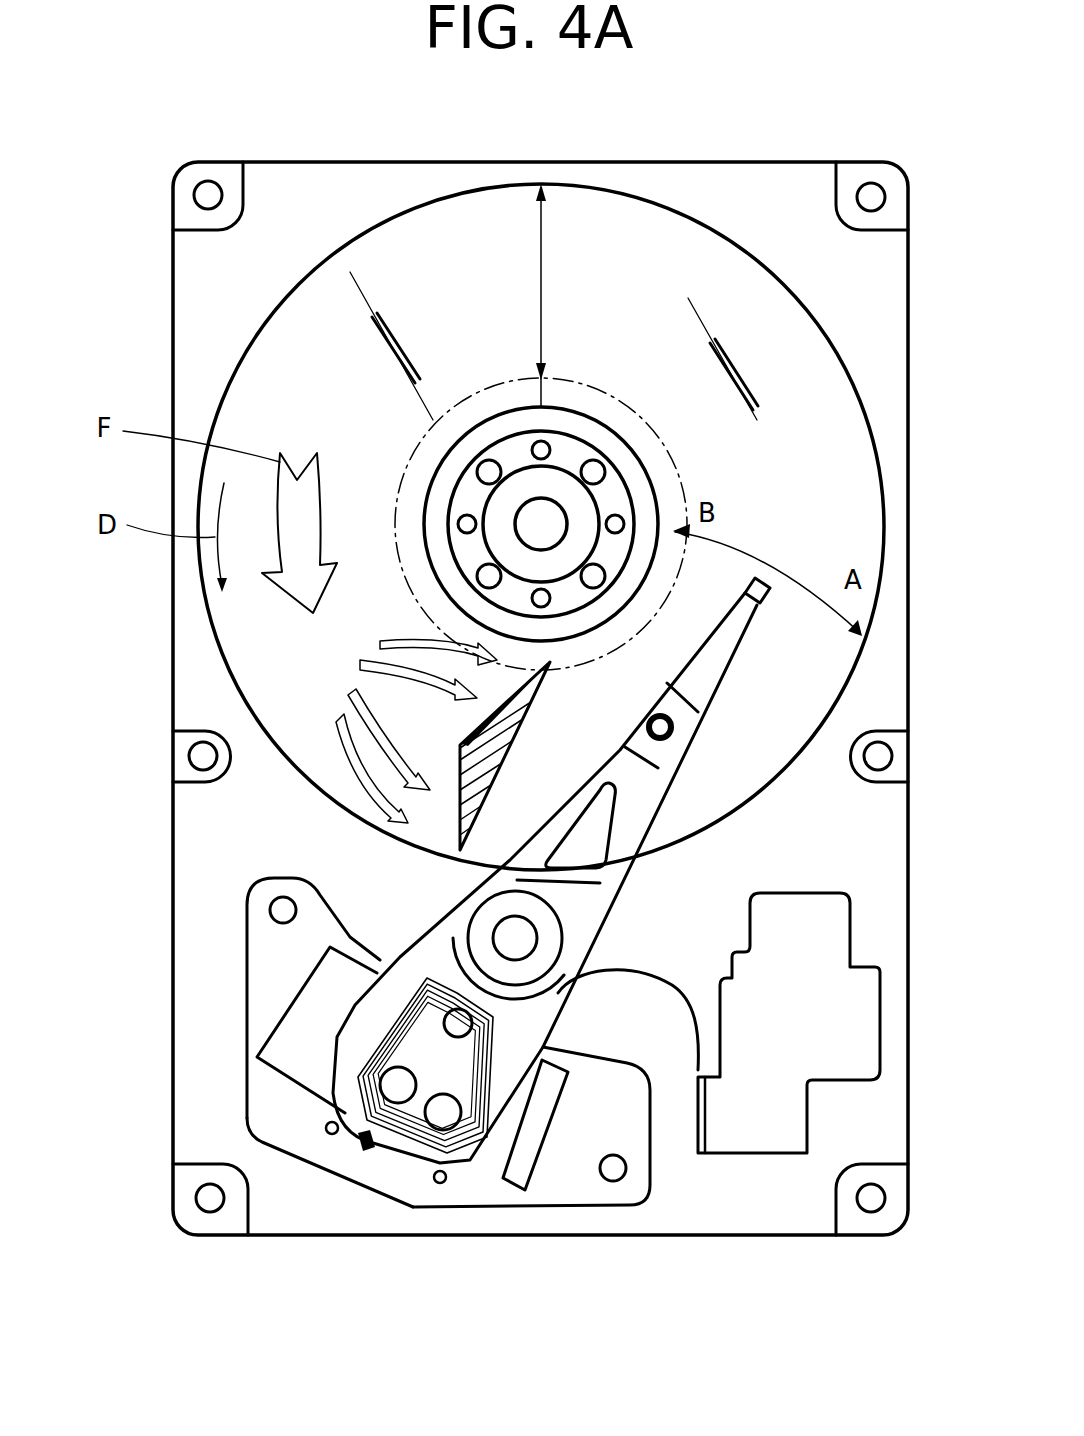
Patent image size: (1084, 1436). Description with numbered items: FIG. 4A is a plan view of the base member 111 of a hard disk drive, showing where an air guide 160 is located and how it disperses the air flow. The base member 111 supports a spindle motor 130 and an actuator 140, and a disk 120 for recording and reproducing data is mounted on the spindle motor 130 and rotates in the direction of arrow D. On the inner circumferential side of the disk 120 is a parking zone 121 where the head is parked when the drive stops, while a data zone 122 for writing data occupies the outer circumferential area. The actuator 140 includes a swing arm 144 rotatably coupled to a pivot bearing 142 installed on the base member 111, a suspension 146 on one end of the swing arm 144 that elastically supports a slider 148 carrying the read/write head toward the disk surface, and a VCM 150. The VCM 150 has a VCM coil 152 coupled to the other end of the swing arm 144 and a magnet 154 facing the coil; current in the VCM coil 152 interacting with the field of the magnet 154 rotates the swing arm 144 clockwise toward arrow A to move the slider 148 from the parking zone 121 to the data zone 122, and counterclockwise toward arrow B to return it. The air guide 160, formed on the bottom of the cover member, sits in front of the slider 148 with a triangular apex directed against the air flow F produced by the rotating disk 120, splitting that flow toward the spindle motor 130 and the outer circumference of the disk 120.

The base member 111 is at (577, 1235).
The disk 120 is at (412, 252).
The parking zone 121 is at (545, 392).
The data zone 122 is at (543, 282).
The spindle motor 130 is at (486, 424).
The actuator 140 is at (614, 908).
The pivot bearing 142 is at (513, 937).
The swing arm 144 is at (640, 802).
The suspension 146 is at (724, 653).
The slider 148 is at (760, 597).
The VCM 150 is at (388, 1173).
The VCM coil 152 is at (417, 1140).
The magnet 154 is at (503, 1177).
The air guide 160 is at (515, 735).